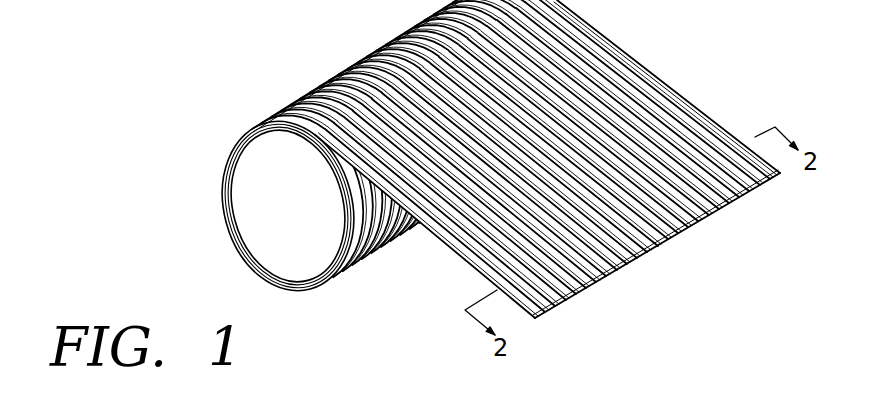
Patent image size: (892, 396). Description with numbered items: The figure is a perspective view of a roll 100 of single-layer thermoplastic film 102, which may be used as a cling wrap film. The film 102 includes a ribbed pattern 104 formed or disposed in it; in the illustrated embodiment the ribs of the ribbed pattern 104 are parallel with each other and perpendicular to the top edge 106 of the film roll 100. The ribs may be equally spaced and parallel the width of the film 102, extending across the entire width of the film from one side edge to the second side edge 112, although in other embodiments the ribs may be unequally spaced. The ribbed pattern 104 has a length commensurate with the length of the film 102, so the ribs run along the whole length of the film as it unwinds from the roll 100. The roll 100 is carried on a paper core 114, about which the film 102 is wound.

The roll 100 is at (483, 164).
The thermoplastic film 102 is at (547, 159).
The ribbed pattern 104 is at (610, 121).
The top edge 106 is at (604, 279).
The second side edge 112 is at (460, 248).
The paper core 114 is at (266, 271).